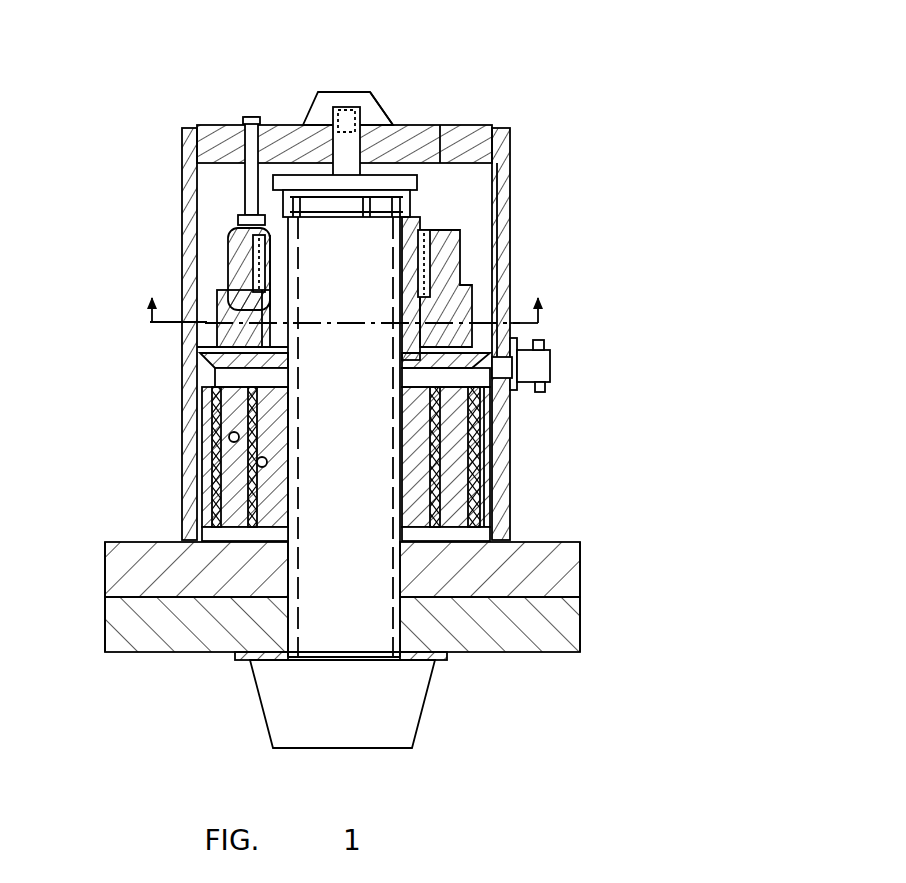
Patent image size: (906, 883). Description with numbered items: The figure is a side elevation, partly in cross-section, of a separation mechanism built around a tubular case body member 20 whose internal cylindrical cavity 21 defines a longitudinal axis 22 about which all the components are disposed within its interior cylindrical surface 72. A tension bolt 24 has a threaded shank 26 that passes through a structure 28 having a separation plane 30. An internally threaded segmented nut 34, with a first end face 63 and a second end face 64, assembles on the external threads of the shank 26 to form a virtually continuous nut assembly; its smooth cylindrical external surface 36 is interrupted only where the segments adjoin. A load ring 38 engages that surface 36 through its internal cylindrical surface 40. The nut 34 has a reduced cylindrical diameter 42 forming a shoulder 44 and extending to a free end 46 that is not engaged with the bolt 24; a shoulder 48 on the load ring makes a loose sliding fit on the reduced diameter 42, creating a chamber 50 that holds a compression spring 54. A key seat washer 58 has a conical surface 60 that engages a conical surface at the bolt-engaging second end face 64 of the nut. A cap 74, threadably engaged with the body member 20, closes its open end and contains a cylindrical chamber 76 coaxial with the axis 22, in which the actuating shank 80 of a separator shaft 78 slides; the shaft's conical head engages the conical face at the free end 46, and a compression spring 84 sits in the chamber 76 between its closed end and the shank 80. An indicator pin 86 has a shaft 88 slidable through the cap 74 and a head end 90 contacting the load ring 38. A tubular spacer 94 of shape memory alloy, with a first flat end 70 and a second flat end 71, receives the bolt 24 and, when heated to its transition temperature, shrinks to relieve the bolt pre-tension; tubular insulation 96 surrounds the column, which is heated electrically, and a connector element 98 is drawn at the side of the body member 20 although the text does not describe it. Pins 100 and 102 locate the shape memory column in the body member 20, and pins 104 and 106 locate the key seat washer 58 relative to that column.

The case body member 20 is at (515, 160).
The internal cylindrical cavity 21 is at (497, 205).
The longitudinal axis 22 is at (340, 92).
The tension bolt 24 is at (430, 700).
The shank 26 is at (318, 643).
The structure 28 is at (583, 632).
The separation plane 30 is at (580, 600).
The segmented nut 34 is at (258, 262).
The smooth cylindrical external surface 36 is at (220, 342).
The load ring 38 is at (150, 320).
The internal cylindrical surface 40 is at (262, 272).
The reduced cylindrical diameter 42 is at (214, 302).
The shoulder 44 is at (258, 300).
The free end 46 is at (242, 197).
The shoulder 48 is at (290, 250).
The chamber 50 is at (462, 280).
The compression spring 54 is at (436, 268).
The key seat washer 58 is at (212, 370).
The conical surface 60 is at (490, 375).
The first end face 63 is at (418, 188).
The second end face 64 is at (508, 352).
The first flat end 70 is at (470, 545).
The second flat end 71 is at (215, 398).
The interior cylindrical surface 72 is at (483, 512).
The cap 74 is at (382, 100).
The cylindrical chamber 76 is at (352, 152).
The separator shaft 78 is at (440, 135).
The actuating shank 80 is at (404, 170).
The compression spring 84 is at (325, 120).
The indicator pin 86 is at (246, 118).
The shaft 88 is at (248, 185).
The head end 90 is at (240, 235).
The tubular spacer 94 is at (449, 483).
The tubular insulation 96 is at (204, 428).
The sensor 98 is at (553, 352).
The pin 100 is at (240, 655).
The pin 102 is at (467, 643).
The pin 104 is at (204, 443).
The pin 106 is at (440, 423).